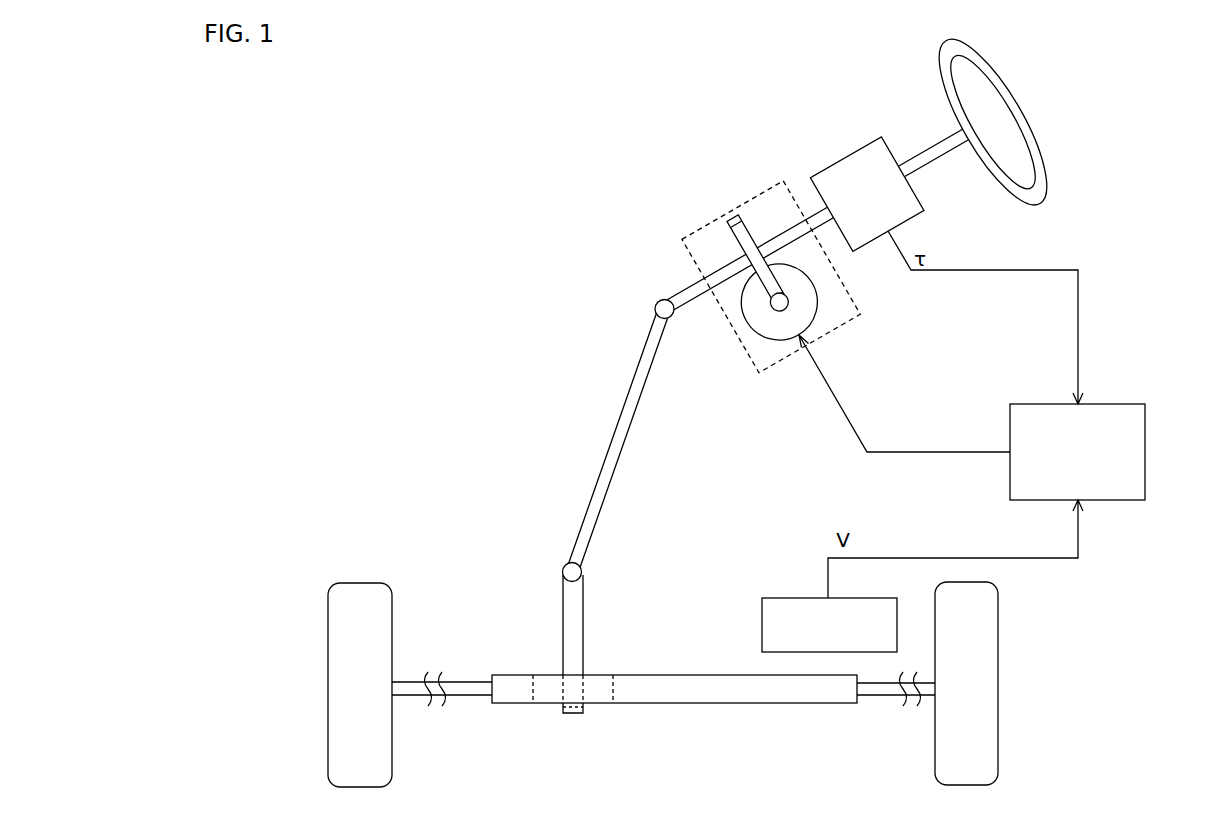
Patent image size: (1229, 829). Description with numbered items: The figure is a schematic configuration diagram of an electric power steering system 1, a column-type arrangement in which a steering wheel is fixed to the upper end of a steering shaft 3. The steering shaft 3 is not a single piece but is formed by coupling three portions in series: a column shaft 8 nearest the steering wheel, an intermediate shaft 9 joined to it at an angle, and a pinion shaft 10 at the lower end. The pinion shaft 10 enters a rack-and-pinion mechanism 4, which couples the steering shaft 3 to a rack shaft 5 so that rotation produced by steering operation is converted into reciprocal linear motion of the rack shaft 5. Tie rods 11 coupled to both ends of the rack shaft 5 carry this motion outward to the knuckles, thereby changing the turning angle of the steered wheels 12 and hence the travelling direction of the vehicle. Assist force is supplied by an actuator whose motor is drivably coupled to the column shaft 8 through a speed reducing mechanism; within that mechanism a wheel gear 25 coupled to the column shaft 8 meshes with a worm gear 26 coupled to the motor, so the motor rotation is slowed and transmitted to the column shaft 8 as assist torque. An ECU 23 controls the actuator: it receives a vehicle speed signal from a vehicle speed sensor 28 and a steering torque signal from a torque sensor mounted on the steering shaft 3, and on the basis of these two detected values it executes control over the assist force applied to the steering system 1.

The electric power steering system 1 is at (494, 202).
The steering shaft 3 is at (588, 435).
The rack-and-pinion mechanism 4 is at (598, 695).
The rack shaft 5 is at (680, 675).
The column shaft 8 is at (656, 300).
The intermediate shaft 9 is at (617, 424).
The pinion shaft 10 is at (547, 580).
The tie rods 11 is at (463, 698).
The steered wheels 12 is at (392, 617).
The ECU 23 is at (1145, 450).
The wheel gear 25 is at (767, 280).
The worm gear 26 is at (772, 327).
The vehicle speed sensor 28 is at (778, 597).